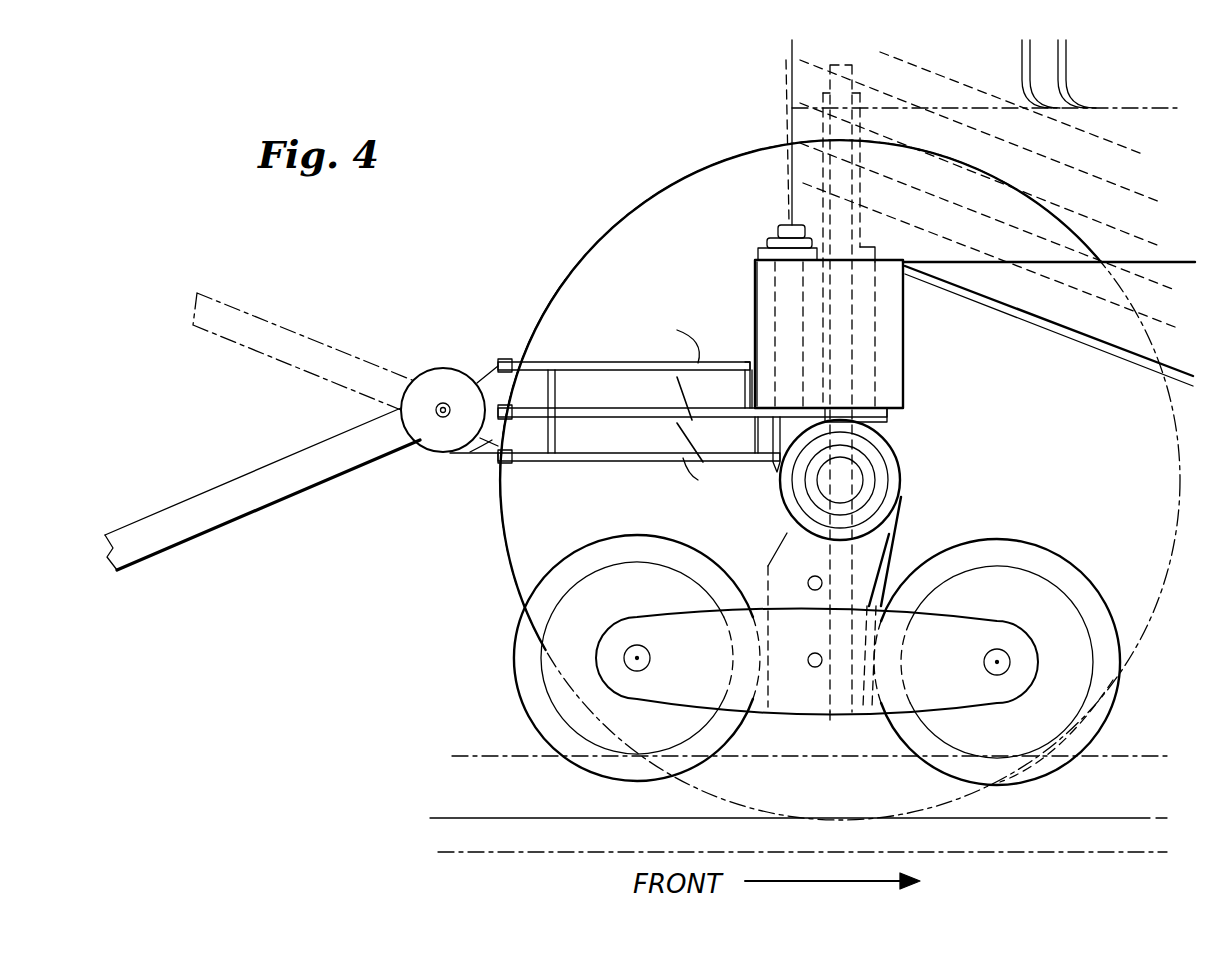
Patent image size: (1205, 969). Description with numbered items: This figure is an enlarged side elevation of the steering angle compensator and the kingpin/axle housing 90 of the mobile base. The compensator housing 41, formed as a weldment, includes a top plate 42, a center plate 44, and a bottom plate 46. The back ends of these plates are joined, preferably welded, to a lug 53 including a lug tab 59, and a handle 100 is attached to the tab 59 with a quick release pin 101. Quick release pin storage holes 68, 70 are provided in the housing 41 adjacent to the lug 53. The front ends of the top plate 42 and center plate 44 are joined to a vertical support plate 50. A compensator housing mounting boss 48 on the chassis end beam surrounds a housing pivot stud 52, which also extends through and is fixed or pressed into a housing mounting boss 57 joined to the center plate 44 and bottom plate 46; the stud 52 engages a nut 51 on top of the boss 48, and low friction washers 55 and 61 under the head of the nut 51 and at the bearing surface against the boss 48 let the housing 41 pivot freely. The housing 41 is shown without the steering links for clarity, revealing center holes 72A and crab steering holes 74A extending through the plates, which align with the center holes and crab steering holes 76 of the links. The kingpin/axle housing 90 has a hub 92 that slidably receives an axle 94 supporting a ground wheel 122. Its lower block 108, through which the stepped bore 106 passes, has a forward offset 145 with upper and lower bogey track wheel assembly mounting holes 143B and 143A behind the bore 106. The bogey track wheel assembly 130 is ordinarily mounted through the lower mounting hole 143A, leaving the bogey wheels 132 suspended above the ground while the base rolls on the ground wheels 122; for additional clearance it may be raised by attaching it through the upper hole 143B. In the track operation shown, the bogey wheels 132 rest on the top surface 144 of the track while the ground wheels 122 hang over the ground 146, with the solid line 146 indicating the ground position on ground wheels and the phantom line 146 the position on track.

The handle 100 is at (265, 482).
The lug tab 59 is at (436, 380).
The quick release pin 101 is at (440, 418).
The lug 53 is at (488, 440).
The housing 41 is at (505, 480).
The wheel 122 is at (760, 145).
The top plate 42 is at (515, 365).
The quick release pin storage hole 68 is at (587, 374).
The quick release pin storage hole 70 is at (573, 358).
The center plate 44 is at (623, 405).
The bottom plate 46 is at (623, 462).
The crab steering hole 76 is at (661, 411).
The crab steering hole 74A is at (654, 448).
The vertical support plate 50 is at (740, 381).
The center hole 72A is at (712, 438).
The compensator housing mounting boss 48 is at (760, 290).
The stud 52 is at (768, 311).
The low friction washer 55 is at (760, 254).
The low friction washer 61 is at (765, 244).
The nut 51 is at (770, 238).
The kingpin/axle housing 90 is at (906, 490).
The hub 92 is at (872, 462).
The axle 94 is at (836, 490).
The housing mounting boss 57 is at (771, 440).
The lower block 108 is at (750, 572).
The bogey track wheel assembly 130 is at (880, 600).
The bogey wheel 132 is at (1053, 566).
The forward offset 145 is at (790, 652).
The upper bogey track wheel assembly mounting hole 143B is at (806, 584).
The lower bogey track wheel assembly mounting hole 143A is at (816, 670).
The stepped bore 106 is at (837, 718).
The top surface 144 is at (1123, 755).
The ground 146 is at (510, 818).